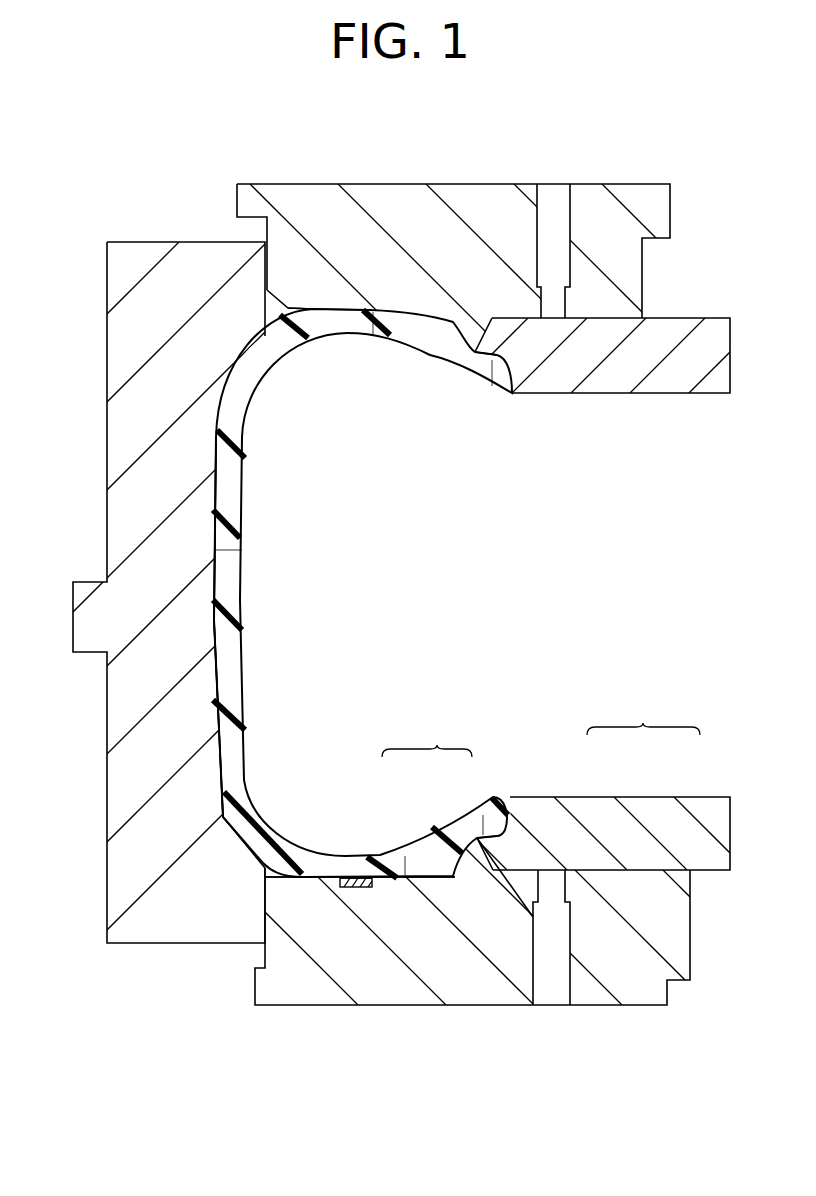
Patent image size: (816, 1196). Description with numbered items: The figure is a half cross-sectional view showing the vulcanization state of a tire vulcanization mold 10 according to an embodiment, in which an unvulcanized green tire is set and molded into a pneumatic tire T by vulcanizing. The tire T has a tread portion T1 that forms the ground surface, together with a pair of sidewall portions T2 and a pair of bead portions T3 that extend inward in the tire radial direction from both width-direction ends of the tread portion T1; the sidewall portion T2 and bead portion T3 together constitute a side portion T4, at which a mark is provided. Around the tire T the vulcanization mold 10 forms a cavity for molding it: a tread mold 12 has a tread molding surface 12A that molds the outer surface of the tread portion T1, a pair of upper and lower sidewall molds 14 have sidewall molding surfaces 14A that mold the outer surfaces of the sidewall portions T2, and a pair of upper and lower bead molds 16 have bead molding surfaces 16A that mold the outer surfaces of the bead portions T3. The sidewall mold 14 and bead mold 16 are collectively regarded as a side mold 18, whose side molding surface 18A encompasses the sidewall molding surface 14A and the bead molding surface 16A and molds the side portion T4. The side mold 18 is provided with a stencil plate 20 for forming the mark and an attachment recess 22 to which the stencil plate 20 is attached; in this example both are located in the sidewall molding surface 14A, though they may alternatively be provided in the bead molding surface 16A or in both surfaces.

The tire vulcanization mold 10 is at (412, 114).
The tread mold 12 is at (120, 705).
The tread molding surface 12A is at (219, 638).
The sidewall mold 14 is at (322, 192).
The sidewall molding surface 14A is at (337, 313).
The bead mold 16 is at (710, 335).
The bead molding surface 16A is at (484, 358).
The side mold 18 is at (643, 712).
The side molding surface 18A is at (393, 875).
The stencil plate 20 is at (365, 888).
The attachment recess 22 is at (350, 888).
The pneumatic tire T is at (214, 460).
The tread portion T1 is at (243, 551).
The sidewall portion T2 is at (373, 338).
The bead portion T3 is at (492, 386).
The side portion T4 is at (427, 735).